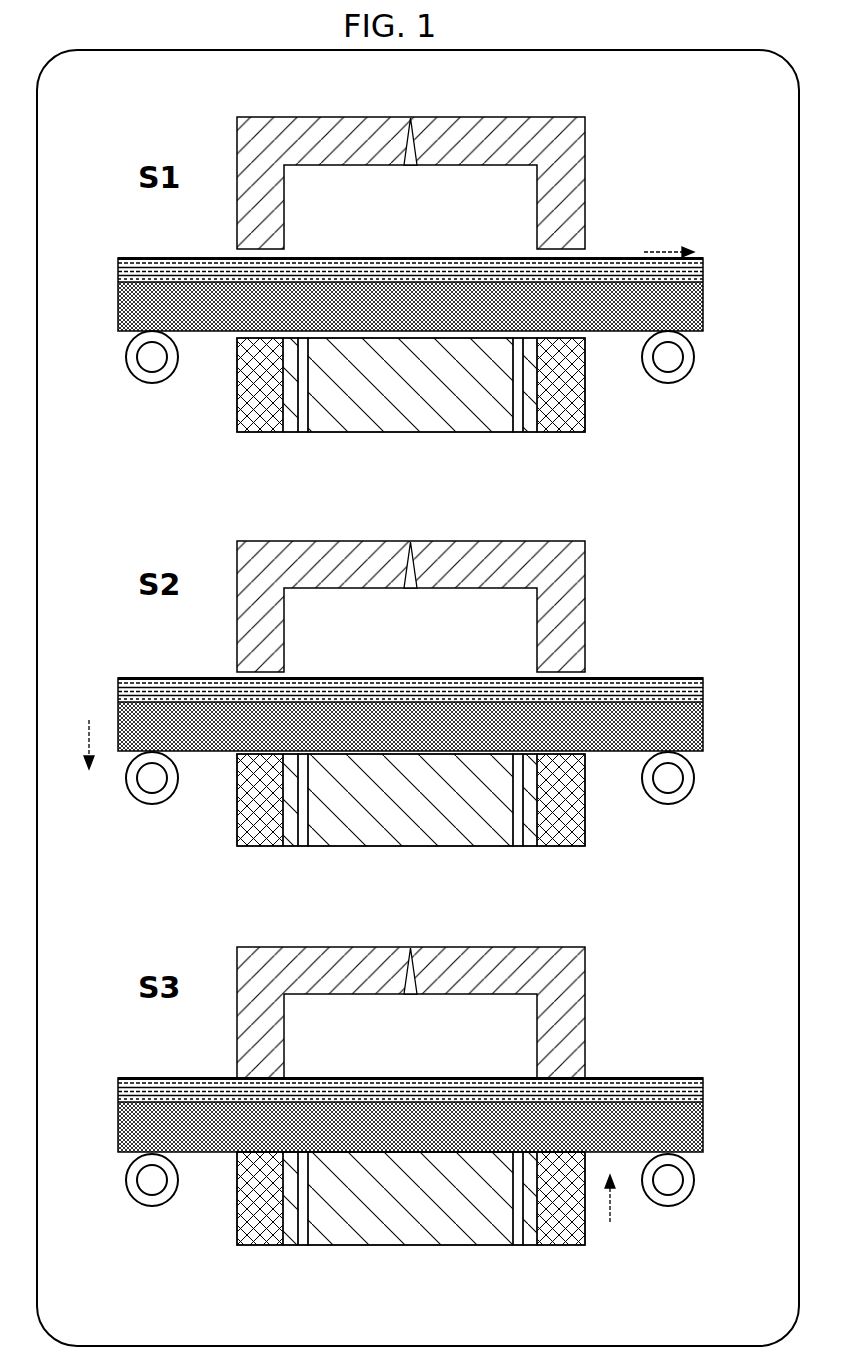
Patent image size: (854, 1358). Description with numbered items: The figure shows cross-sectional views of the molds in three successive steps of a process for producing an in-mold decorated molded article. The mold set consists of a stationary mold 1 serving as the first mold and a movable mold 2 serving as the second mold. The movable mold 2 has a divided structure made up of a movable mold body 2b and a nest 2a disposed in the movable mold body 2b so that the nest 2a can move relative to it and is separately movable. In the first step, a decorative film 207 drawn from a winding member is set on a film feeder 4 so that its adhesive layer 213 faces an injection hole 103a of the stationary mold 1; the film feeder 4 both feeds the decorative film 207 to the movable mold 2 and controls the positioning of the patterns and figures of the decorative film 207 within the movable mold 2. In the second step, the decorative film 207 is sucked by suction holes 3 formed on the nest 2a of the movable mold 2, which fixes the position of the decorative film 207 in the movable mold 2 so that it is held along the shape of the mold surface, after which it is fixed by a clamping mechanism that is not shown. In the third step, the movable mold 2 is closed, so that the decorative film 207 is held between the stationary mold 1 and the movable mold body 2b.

The stationary mold 1 is at (576, 136).
The injection hole 103a is at (407, 142).
The movable mold 2 is at (412, 826).
The nest 2a is at (410, 807).
The movable mold body 2b is at (268, 433).
The suction holes 3 is at (301, 433).
The film feeder 4 is at (150, 384).
The decorative film 207 is at (443, 679).
The adhesive layer 213 is at (626, 257).